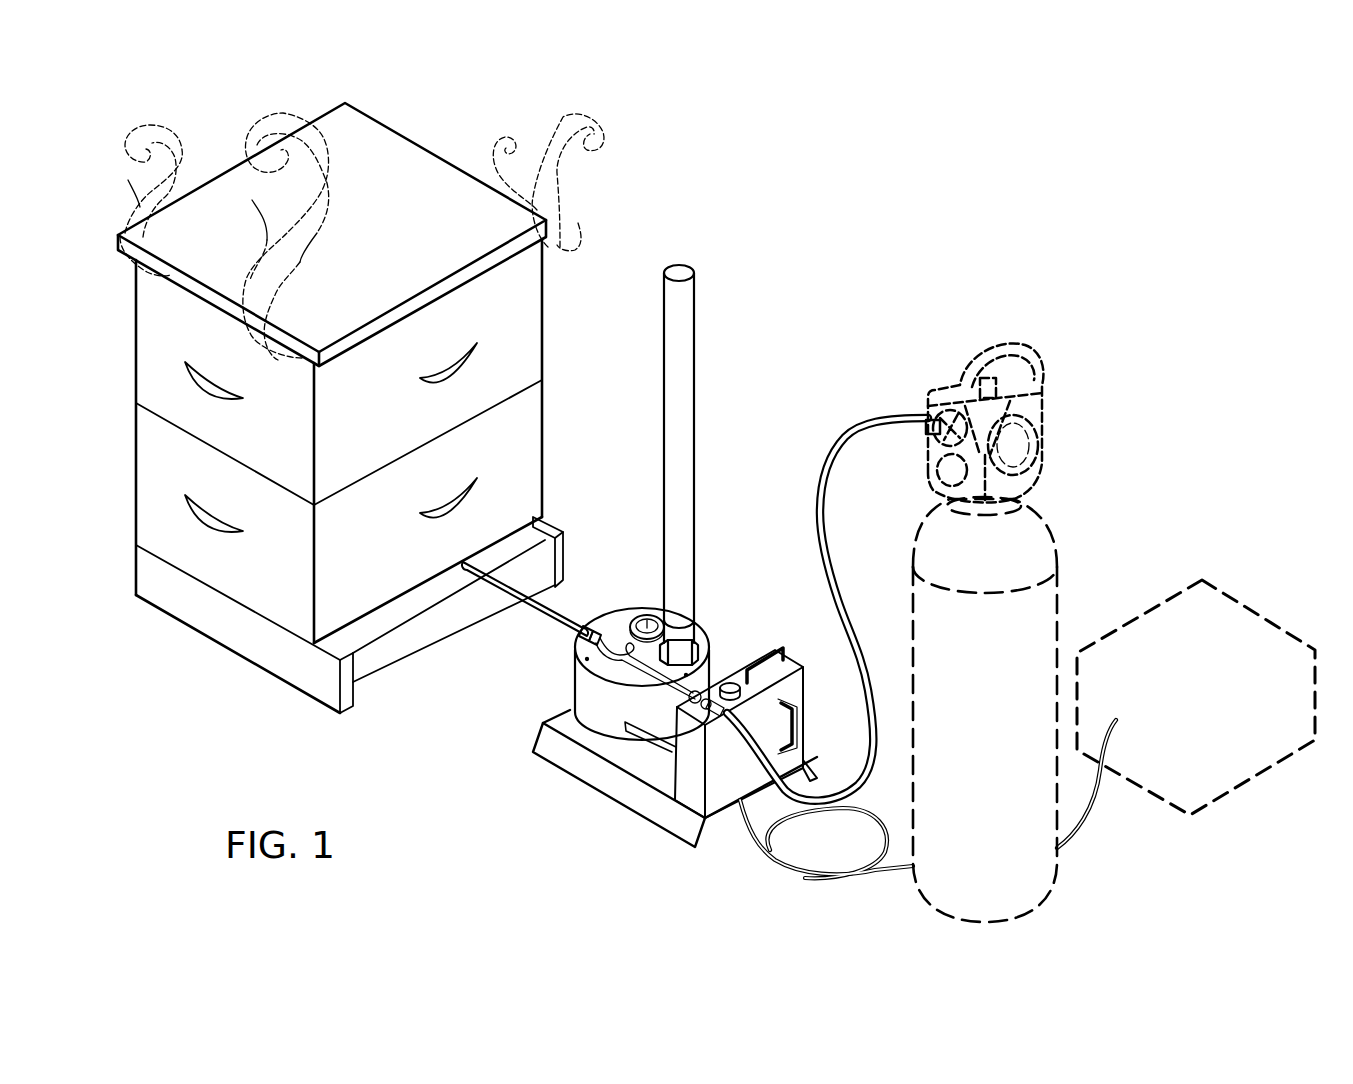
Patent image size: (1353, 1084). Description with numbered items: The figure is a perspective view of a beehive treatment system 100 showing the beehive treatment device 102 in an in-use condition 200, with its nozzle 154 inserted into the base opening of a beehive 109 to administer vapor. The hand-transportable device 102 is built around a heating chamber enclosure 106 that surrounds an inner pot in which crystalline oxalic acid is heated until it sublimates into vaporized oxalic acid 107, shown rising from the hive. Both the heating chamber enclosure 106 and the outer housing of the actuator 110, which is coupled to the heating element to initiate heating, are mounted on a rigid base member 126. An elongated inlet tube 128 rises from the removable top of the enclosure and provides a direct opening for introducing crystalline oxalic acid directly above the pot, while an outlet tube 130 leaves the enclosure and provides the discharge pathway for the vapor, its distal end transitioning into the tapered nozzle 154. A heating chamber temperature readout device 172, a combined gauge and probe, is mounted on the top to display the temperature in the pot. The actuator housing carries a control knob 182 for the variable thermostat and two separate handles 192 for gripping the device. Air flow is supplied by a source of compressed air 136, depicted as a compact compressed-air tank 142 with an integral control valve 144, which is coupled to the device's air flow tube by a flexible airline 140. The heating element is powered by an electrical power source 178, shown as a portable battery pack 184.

The beehive treatment system 100 is at (1066, 244).
The beehive treatment device 102 is at (623, 556).
The heating chamber enclosure 106 is at (560, 688).
The vaporized oxalic acid 107 is at (168, 196).
The beehive 109 is at (248, 686).
The actuator 110 is at (711, 731).
The rigid base member 126 is at (545, 742).
The inlet tube 128 is at (697, 530).
The outlet tube 130 is at (570, 630).
The compressed air 136 is at (1078, 875).
The flexible airline 140 is at (893, 410).
The compact compressed-air tank 142 is at (961, 403).
The integral control valve 144 is at (1018, 447).
The nozzle 154 is at (463, 560).
The heating chamber temperature readout device 172 is at (650, 612).
The electrical power source 178 is at (1228, 592).
The control knob 182 is at (742, 691).
The portable battery pack 184 is at (1027, 707).
The handle 192 is at (782, 647).
The in-use condition 200 is at (1118, 321).